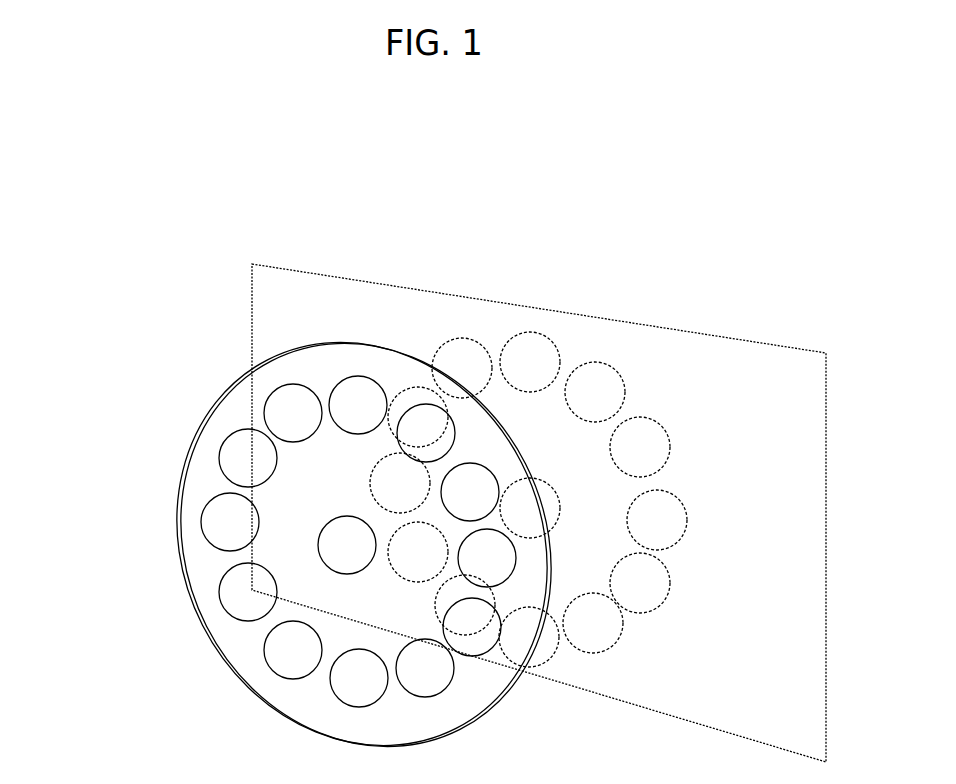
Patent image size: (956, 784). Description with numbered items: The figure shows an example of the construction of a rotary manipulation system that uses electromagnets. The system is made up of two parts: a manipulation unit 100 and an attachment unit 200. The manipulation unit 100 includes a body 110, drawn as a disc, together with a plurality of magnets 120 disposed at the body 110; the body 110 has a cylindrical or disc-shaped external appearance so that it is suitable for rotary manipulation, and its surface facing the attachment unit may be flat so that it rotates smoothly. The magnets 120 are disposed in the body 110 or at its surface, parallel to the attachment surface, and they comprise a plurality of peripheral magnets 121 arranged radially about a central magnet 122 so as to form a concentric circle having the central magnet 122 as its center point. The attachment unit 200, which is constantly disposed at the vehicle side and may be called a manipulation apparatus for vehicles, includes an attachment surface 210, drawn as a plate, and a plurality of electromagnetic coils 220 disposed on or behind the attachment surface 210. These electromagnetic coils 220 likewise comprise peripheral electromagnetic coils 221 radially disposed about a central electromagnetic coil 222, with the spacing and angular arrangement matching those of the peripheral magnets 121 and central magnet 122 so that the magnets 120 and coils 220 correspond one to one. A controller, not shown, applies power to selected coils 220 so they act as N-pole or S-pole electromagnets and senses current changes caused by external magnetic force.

The manipulation unit 100 is at (186, 413).
The body 110 is at (202, 473).
The magnets 120 is at (100, 498).
The peripheral magnets 121 is at (203, 525).
The central magnet 122 is at (318, 553).
The attachment unit 200 is at (618, 192).
The attachment surface 210 is at (727, 338).
The electromagnetic coils 220 is at (572, 246).
The peripheral electromagnetic coils 221 is at (531, 335).
The central electromagnetic coil 222 is at (538, 497).